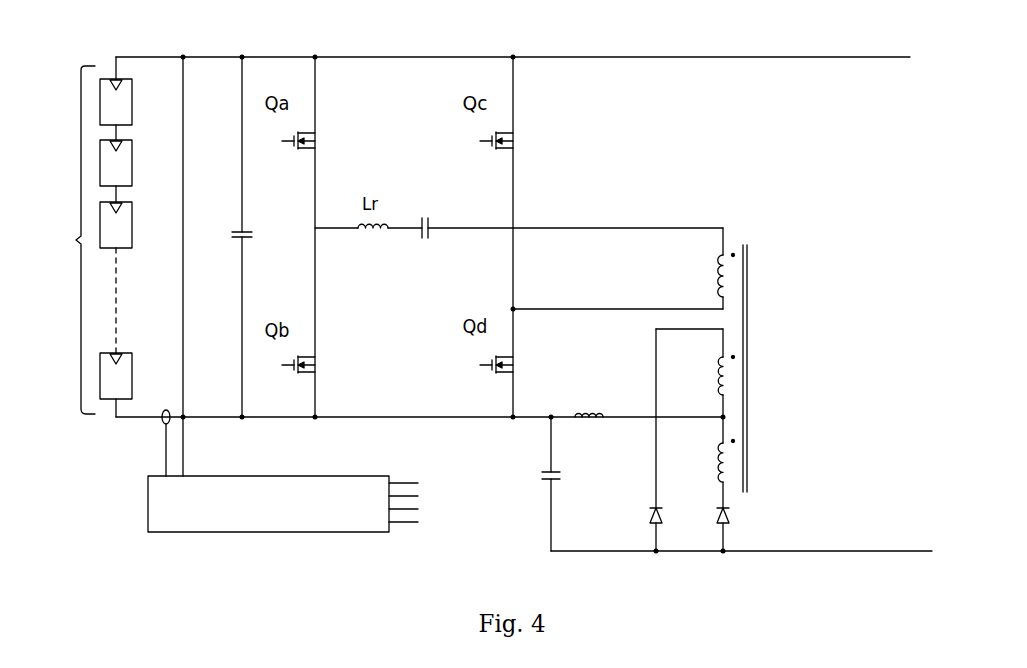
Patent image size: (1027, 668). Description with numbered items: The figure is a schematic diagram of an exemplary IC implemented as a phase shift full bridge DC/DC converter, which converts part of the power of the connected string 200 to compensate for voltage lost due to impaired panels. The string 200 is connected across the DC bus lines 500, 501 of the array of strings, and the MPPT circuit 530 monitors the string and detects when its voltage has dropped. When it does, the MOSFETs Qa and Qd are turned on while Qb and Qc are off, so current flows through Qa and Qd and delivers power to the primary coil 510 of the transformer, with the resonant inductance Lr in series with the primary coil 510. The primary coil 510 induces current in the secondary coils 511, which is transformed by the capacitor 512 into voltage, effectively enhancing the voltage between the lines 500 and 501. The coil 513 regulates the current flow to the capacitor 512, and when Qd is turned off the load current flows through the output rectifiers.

The DC bus line 500 is at (223, 57).
The string 200 is at (76, 240).
The primary coil 510 is at (716, 281).
The secondary coils 511 is at (731, 377).
The capacitor 512 is at (537, 469).
The coil 513 is at (588, 406).
The MPPT circuit 530 is at (165, 517).
The DC bus line 501 is at (806, 551).